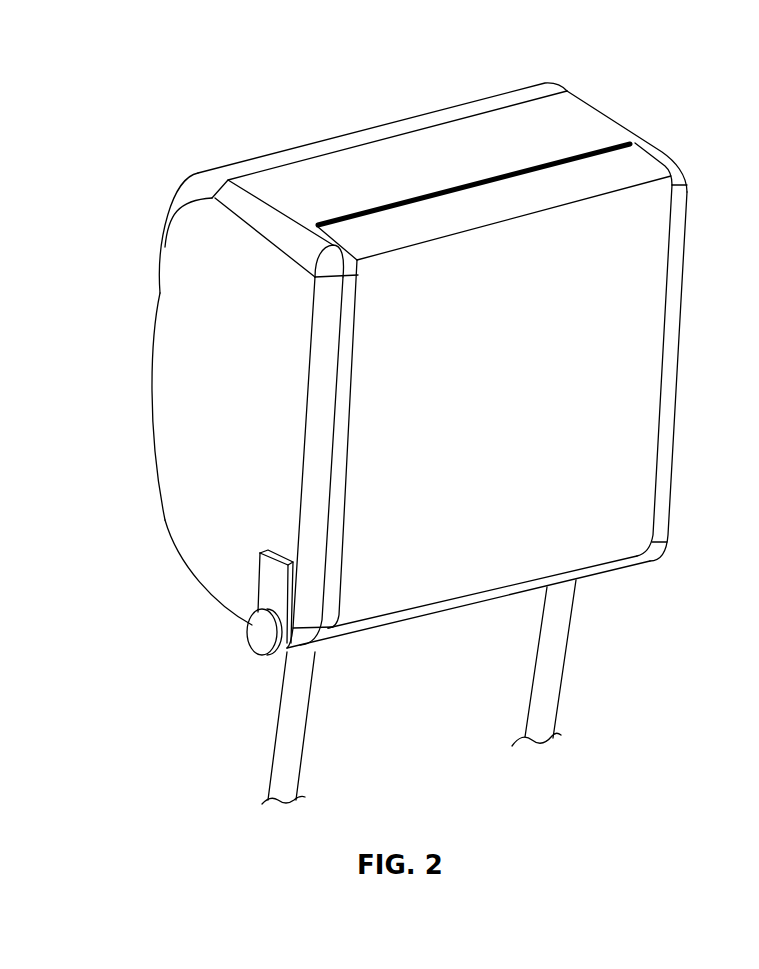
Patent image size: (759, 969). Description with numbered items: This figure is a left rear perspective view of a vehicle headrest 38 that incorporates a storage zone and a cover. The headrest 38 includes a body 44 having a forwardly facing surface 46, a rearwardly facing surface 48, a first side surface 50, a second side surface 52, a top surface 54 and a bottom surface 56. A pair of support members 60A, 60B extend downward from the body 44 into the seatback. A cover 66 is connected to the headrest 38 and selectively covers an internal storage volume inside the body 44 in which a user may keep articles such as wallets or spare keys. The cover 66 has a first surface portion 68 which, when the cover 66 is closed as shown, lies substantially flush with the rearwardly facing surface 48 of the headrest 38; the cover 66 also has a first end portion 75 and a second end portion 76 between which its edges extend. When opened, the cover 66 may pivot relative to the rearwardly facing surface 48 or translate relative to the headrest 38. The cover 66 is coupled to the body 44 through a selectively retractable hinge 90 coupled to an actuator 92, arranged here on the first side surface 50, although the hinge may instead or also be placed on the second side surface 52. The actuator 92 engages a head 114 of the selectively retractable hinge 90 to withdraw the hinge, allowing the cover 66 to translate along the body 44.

The headrest 38 is at (166, 153).
The body 44 is at (156, 254).
The forwardly facing surface 46 is at (153, 360).
The rearwardly facing surface 48 is at (667, 398).
The first side surface 50 is at (195, 477).
The second side surface 52 is at (692, 168).
The top surface 54 is at (367, 163).
The bottom surface 56 is at (218, 607).
The support member 60A is at (300, 768).
The support member 60B is at (556, 692).
The cover 66 is at (520, 273).
The first surface portion 68 is at (573, 460).
The first end portion 75 is at (640, 168).
The second end portion 76 is at (410, 625).
The selectively retractable hinge 90 is at (268, 666).
The actuator 92 is at (272, 580).
The head 114 is at (262, 645).